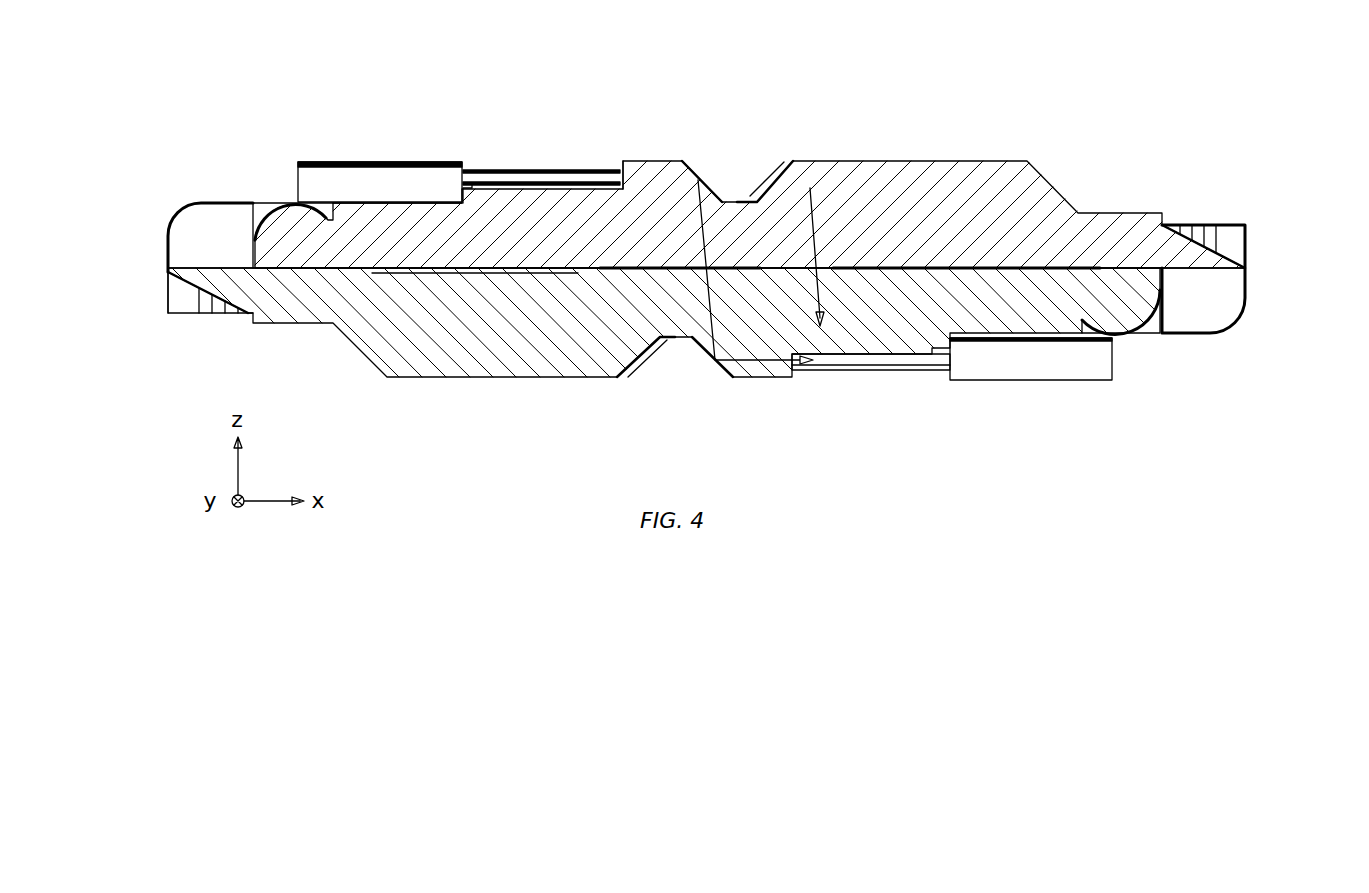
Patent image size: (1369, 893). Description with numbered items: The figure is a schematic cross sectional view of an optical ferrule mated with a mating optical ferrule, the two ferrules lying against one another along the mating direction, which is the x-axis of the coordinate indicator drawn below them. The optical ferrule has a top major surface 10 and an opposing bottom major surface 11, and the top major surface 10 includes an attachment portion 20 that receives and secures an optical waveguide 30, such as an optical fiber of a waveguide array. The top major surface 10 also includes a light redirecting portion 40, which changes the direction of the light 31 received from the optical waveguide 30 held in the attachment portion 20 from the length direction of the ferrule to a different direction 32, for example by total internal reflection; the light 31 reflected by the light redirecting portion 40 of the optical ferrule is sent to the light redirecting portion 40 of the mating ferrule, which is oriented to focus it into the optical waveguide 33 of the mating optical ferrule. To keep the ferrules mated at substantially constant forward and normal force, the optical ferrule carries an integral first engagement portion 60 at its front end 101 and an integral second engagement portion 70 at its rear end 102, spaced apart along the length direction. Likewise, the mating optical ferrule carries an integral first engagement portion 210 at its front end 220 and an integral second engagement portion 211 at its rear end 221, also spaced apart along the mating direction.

The top major surface 10 is at (940, 162).
The bottom major surface 11 is at (455, 272).
The attachment portion 20 is at (522, 188).
The optical waveguide 30 is at (482, 167).
The light 31 is at (667, 181).
The different direction 32 is at (815, 230).
The optical waveguide 33 is at (897, 360).
The light redirecting portion 40 is at (684, 166).
The first engagement portion 60 is at (1197, 262).
The second engagement portion 70 is at (190, 300).
The front end 101 is at (1247, 268).
The rear end 102 is at (167, 303).
The first engagement portion 210 is at (217, 283).
The second engagement portion 211 is at (1217, 240).
The front end 220 is at (167, 272).
The rear end 221 is at (1247, 238).